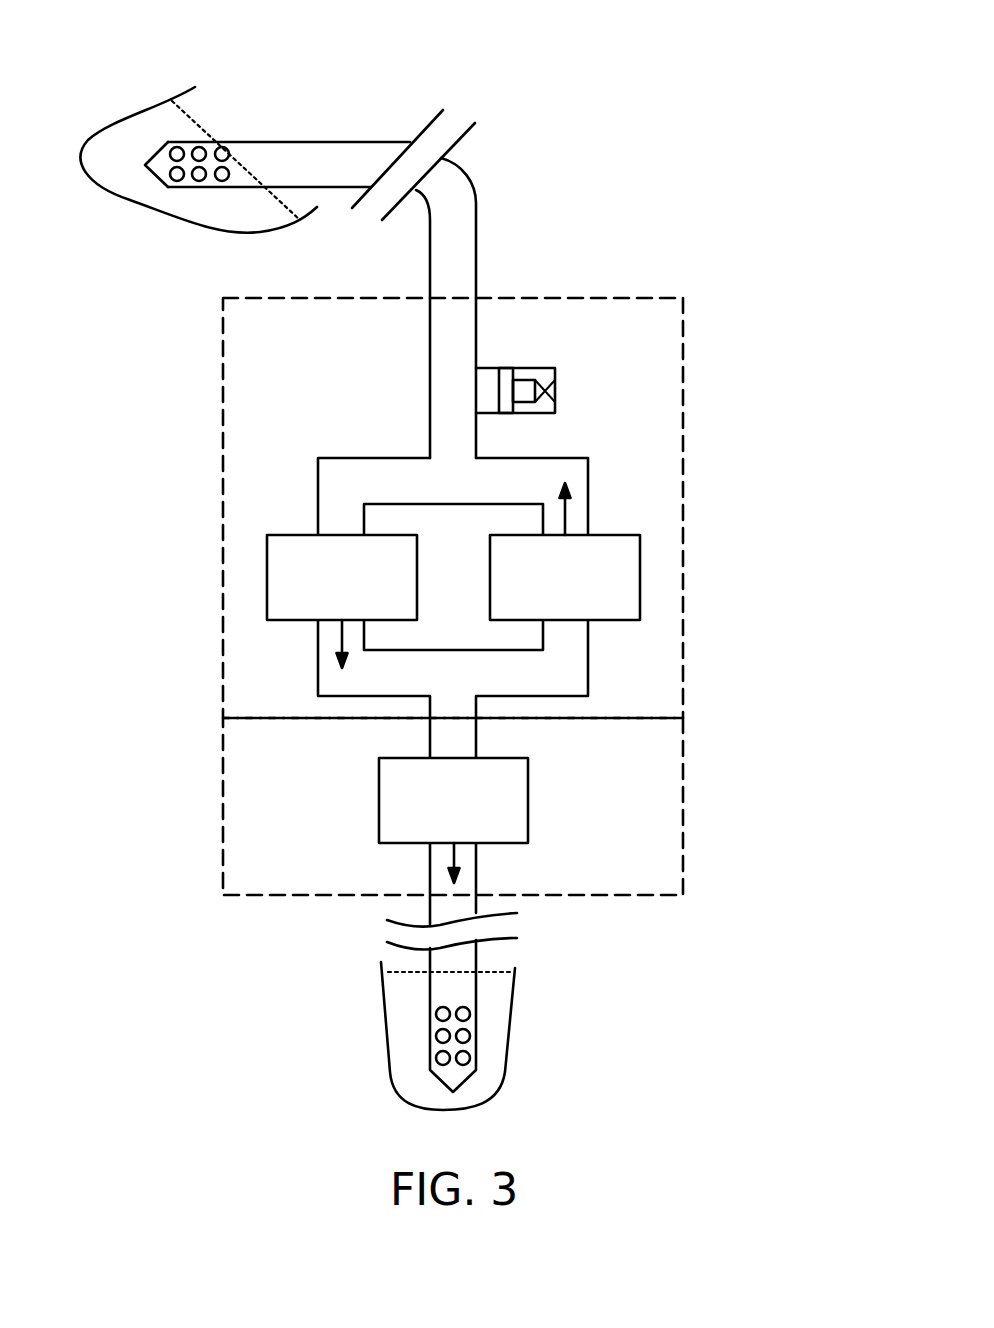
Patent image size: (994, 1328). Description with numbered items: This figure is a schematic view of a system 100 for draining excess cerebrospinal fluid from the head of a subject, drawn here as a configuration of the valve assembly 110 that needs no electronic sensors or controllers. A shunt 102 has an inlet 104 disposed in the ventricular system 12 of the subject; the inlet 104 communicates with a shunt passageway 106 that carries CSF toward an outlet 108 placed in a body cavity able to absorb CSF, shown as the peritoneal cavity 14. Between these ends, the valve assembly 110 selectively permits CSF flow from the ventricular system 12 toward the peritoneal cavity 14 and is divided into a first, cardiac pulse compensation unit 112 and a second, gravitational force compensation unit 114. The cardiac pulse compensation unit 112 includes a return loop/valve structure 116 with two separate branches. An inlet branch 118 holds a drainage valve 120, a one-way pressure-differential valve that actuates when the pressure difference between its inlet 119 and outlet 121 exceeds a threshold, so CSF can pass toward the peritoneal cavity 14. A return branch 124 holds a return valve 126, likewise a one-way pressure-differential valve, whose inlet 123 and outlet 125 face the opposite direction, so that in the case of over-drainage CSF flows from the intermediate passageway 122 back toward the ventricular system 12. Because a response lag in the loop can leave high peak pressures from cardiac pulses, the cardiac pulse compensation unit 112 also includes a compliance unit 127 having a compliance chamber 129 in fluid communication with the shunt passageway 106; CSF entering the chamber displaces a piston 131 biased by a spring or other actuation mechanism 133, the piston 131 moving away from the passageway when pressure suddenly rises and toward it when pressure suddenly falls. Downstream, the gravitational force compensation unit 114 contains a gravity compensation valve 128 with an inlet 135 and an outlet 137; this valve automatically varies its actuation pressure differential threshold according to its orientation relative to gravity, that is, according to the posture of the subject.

The ventricular system 12 is at (213, 127).
The peritoneal cavity 14 is at (503, 972).
The system 100 is at (592, 122).
The shunt 102 is at (468, 187).
The inlet 104 is at (187, 187).
The shunt passageway 106 is at (452, 256).
The outlet 108 is at (476, 1042).
The valve assembly 110 is at (469, 596).
The cardiac pulse compensation unit 112 is at (210, 600).
The gravitational force compensation unit 114 is at (210, 810).
The return loop/valve structure 116 is at (350, 437).
The inlet branch 118 is at (318, 478).
The inlet 119 is at (340, 535).
The drainage valve 120 is at (267, 597).
The outlet 121 is at (330, 620).
The intermediate passageway 122 is at (450, 650).
The inlet 123 is at (570, 620).
The return branch 124 is at (588, 478).
The outlet 125 is at (573, 535).
The return valve 126 is at (640, 597).
The compliance unit 127 is at (562, 377).
The gravity compensation valve 128 is at (379, 810).
The compliance chamber 129 is at (483, 378).
The piston 131 is at (518, 406).
The spring or other actuation mechanism 133 is at (541, 383).
The inlet 135 is at (463, 758).
The outlet 137 is at (465, 843).